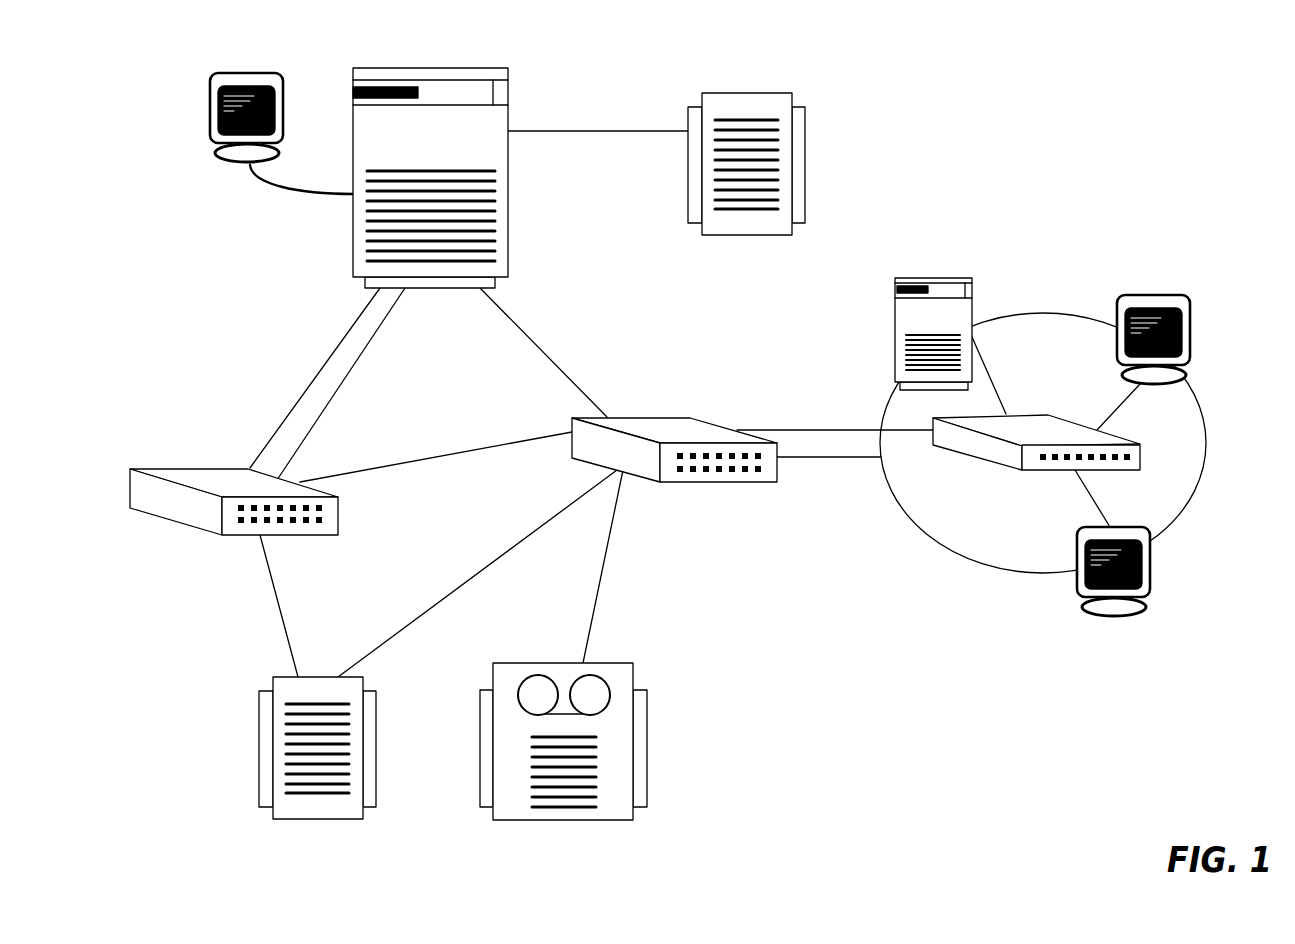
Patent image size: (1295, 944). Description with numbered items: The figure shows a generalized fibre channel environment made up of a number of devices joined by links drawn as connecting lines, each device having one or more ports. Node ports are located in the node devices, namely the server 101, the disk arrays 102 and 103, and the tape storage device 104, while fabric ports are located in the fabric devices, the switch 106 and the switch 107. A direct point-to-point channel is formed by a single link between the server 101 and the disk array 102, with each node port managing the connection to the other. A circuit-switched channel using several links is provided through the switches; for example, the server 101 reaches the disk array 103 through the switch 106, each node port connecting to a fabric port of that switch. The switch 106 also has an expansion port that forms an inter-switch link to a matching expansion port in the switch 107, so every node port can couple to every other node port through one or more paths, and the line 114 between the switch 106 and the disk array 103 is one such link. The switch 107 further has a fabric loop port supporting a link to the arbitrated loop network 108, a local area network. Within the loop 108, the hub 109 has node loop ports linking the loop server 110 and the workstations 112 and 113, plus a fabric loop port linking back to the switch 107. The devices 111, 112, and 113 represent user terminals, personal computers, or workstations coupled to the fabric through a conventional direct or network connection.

The server 101 is at (460, 73).
The disk array 102 is at (780, 104).
The disk array 103 is at (300, 806).
The tape storage device 104 is at (622, 675).
The switch 106 is at (208, 480).
The switch 107 is at (688, 430).
The arbitrated loop network 108 is at (1131, 230).
The hub 109 is at (985, 445).
The loop server 110 is at (947, 287).
The user terminal 111 is at (248, 76).
The workstation 112 is at (1178, 306).
The workstation 113 is at (1113, 622).
The network connection 114 is at (260, 600).